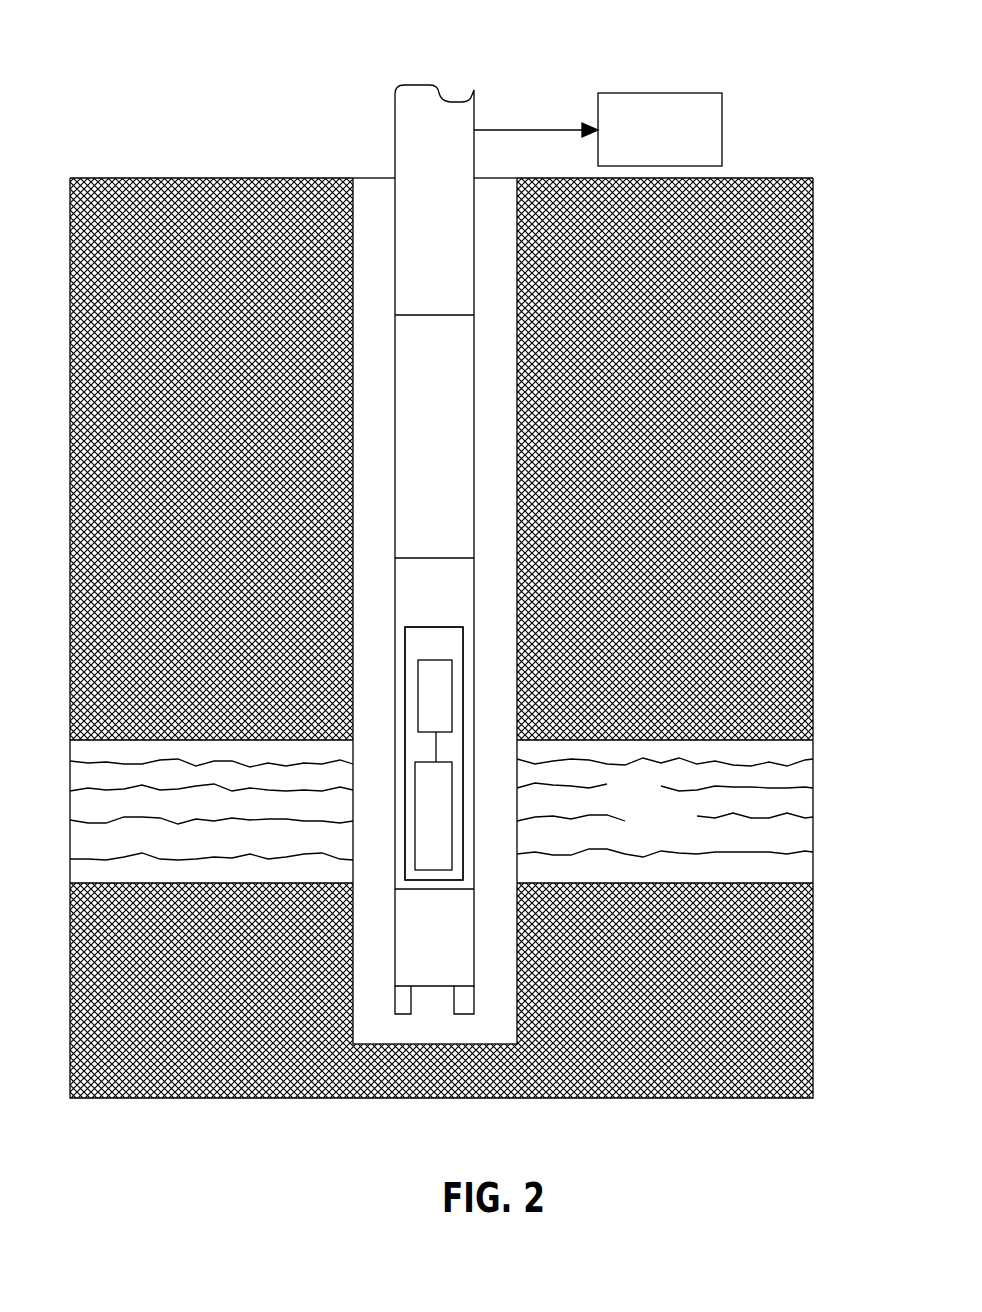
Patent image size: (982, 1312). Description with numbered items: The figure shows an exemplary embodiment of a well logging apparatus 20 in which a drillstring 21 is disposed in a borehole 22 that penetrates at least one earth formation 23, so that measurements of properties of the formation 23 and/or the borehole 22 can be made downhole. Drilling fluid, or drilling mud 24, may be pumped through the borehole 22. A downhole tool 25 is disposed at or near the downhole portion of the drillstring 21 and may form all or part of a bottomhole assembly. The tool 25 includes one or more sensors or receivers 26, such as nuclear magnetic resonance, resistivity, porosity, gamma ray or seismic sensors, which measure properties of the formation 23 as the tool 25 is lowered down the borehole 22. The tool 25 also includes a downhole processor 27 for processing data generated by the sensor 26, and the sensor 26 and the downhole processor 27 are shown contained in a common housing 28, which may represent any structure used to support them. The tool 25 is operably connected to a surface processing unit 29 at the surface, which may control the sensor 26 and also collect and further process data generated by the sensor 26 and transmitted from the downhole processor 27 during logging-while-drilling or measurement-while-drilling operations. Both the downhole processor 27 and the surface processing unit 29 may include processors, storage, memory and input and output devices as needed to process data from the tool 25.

The well logging apparatus 20 is at (332, 73).
The drillstring 21 is at (474, 450).
The borehole 22 is at (350, 195).
The earth formation 23 is at (441, 809).
The drilling mud 24 is at (377, 205).
The downhole tool 25 is at (458, 745).
The sensor 26 is at (433, 847).
The downhole processor 27 is at (430, 685).
The housing 28 is at (403, 745).
The surface processing unit 29 is at (708, 132).